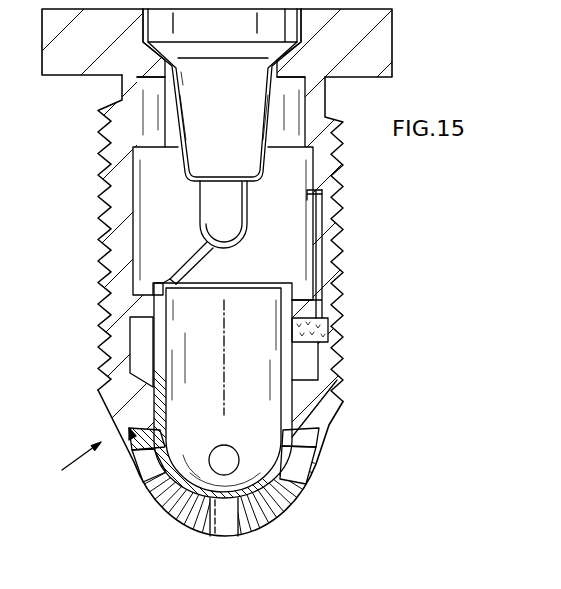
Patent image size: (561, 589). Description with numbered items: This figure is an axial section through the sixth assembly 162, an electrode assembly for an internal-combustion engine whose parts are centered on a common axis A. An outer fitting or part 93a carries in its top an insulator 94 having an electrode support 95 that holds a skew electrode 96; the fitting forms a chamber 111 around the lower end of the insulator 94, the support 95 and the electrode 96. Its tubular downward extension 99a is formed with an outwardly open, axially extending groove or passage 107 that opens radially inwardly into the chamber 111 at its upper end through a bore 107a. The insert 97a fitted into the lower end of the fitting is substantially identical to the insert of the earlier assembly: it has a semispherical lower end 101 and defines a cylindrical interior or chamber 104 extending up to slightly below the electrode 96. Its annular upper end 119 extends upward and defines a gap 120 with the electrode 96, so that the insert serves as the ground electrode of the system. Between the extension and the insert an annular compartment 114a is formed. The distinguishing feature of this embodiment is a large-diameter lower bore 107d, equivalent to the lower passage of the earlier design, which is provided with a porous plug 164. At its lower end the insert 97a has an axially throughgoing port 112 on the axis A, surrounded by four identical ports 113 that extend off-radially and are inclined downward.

The housing flange 93a is at (382, 28).
The insulator 94 is at (187, 21).
The electrode support 95 is at (202, 204).
The skew electrode 96 is at (190, 260).
The insert 97a is at (294, 370).
The wall portion 99a is at (314, 418).
The semispherical lower end 101 is at (281, 500).
The cylindrical interior or chamber 104 is at (180, 395).
The groove or passage 107 is at (332, 244).
The bore 107a is at (322, 199).
The lower bore 107d is at (331, 335).
The chamber 111 is at (292, 185).
The axially throughgoing port 112 is at (224, 533).
The ports 113 is at (302, 466).
The recess 114a is at (138, 347).
The annular upper end 119 is at (152, 298).
The gap 120 is at (152, 282).
The sixth assembly 162 is at (64, 465).
The porous plug 164 is at (330, 310).
The axis A is at (226, 360).